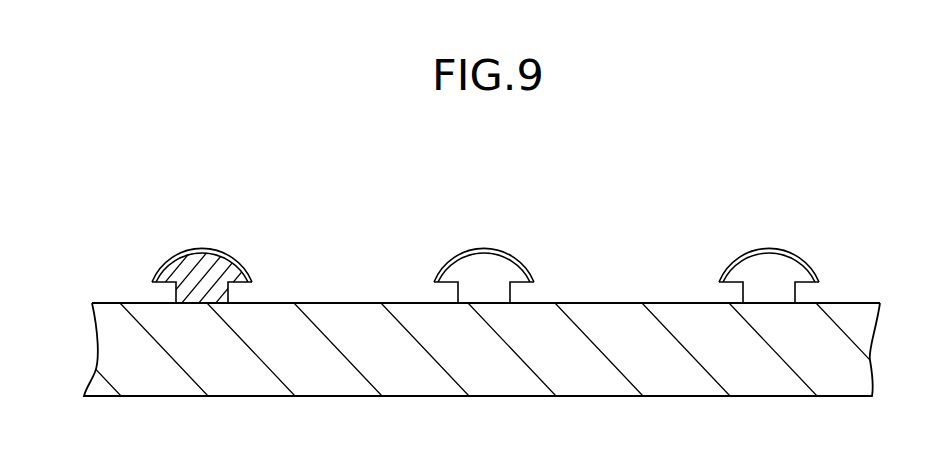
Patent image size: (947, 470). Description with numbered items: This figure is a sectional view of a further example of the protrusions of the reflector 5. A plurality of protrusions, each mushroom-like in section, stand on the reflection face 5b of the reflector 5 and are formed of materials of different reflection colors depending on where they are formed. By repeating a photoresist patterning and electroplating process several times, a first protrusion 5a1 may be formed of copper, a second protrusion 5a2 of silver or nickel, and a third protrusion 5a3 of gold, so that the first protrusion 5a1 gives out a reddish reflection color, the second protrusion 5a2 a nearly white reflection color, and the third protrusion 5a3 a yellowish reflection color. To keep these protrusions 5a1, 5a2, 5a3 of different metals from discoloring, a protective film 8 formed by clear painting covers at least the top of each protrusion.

The reflector 5 is at (863, 363).
The reflection face 5b is at (362, 303).
The first protrusion 5a1 is at (788, 265).
The second protrusion 5a2 is at (503, 265).
The third protrusion 5a3 is at (215, 265).
The protective film 8 is at (187, 247).